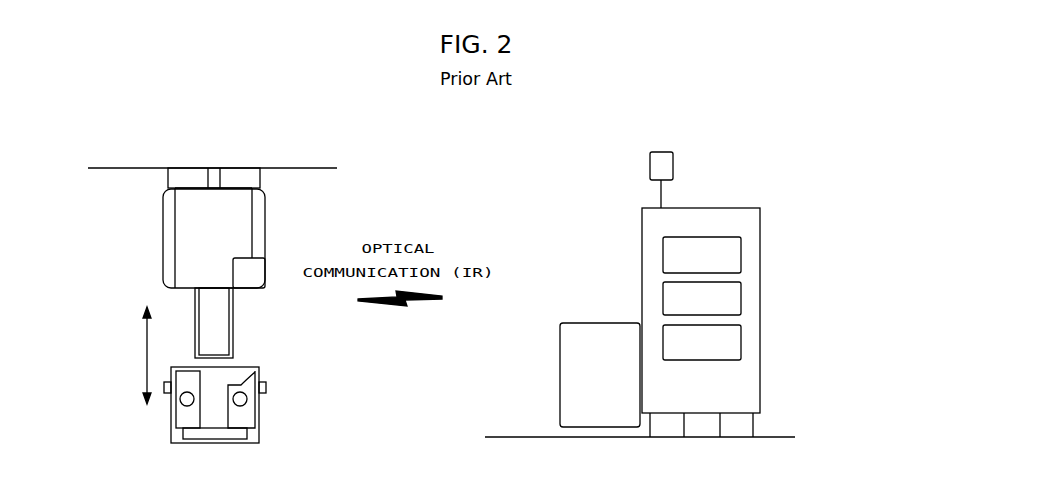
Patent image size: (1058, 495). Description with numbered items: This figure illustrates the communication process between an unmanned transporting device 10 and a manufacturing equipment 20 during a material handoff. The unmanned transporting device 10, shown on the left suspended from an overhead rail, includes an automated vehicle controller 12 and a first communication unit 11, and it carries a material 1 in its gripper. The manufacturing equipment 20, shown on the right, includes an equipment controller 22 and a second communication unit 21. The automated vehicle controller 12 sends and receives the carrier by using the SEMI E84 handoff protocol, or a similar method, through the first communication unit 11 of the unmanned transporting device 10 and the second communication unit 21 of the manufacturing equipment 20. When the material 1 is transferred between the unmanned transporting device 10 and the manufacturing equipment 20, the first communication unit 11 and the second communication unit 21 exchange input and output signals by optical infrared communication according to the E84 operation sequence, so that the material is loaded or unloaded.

The material 1 is at (171, 433).
The unmanned transporting device 10 is at (150, 238).
The first communication unit 11 is at (266, 290).
The automated vehicle controller 12 is at (243, 220).
The manufacturing equipment 20 is at (778, 290).
The second communication unit 21 is at (674, 152).
The equipment controller 22 is at (753, 357).